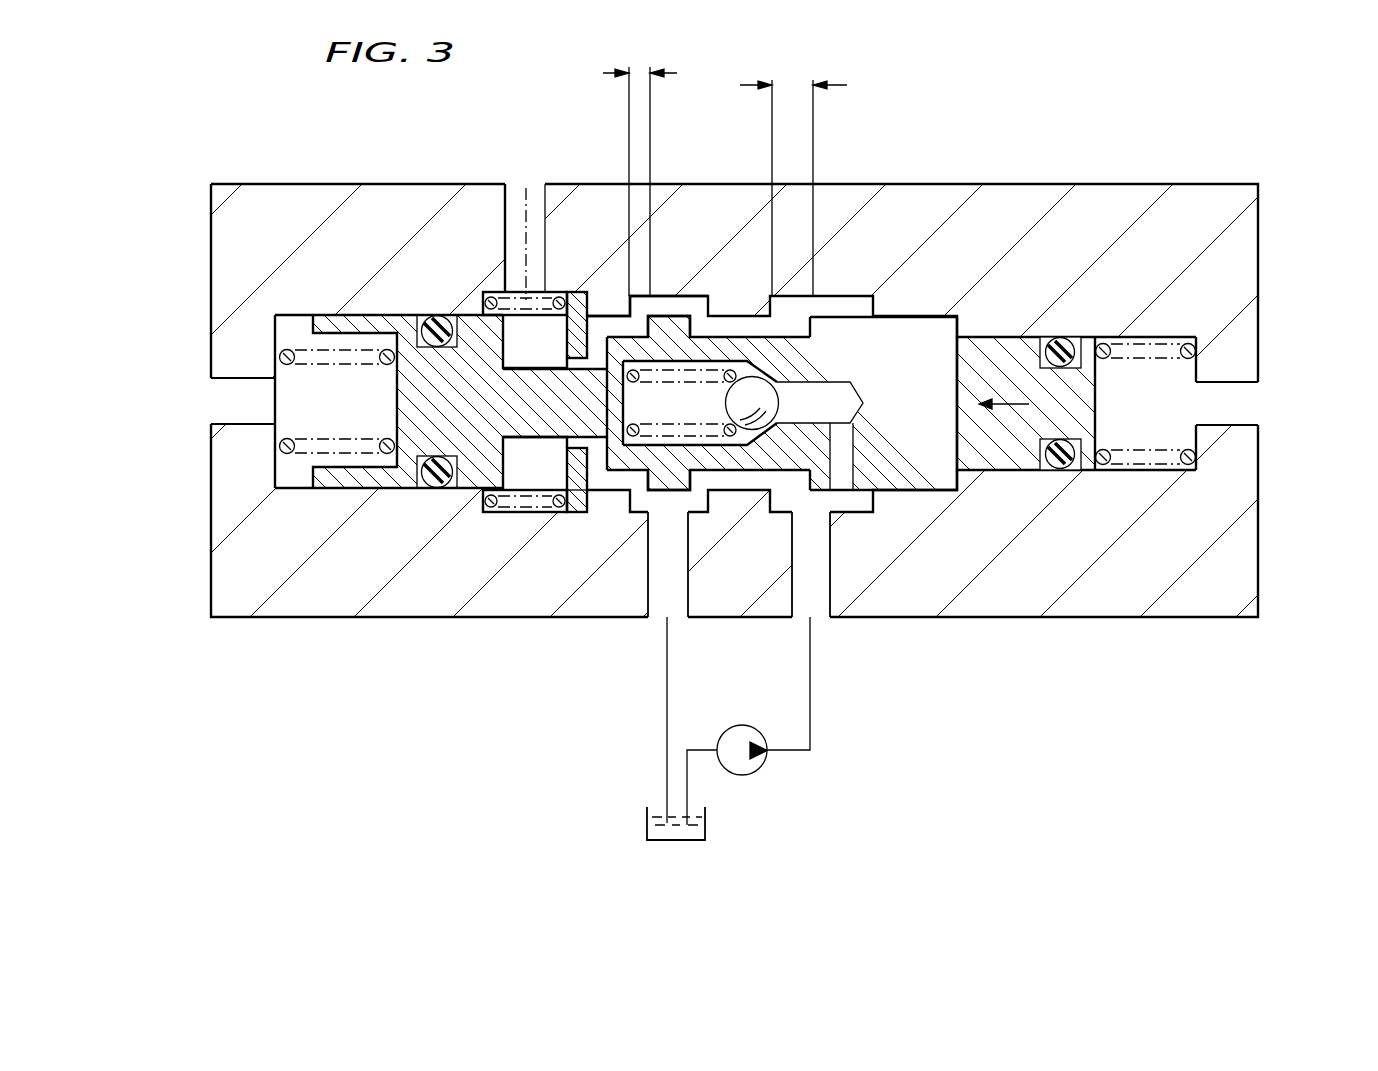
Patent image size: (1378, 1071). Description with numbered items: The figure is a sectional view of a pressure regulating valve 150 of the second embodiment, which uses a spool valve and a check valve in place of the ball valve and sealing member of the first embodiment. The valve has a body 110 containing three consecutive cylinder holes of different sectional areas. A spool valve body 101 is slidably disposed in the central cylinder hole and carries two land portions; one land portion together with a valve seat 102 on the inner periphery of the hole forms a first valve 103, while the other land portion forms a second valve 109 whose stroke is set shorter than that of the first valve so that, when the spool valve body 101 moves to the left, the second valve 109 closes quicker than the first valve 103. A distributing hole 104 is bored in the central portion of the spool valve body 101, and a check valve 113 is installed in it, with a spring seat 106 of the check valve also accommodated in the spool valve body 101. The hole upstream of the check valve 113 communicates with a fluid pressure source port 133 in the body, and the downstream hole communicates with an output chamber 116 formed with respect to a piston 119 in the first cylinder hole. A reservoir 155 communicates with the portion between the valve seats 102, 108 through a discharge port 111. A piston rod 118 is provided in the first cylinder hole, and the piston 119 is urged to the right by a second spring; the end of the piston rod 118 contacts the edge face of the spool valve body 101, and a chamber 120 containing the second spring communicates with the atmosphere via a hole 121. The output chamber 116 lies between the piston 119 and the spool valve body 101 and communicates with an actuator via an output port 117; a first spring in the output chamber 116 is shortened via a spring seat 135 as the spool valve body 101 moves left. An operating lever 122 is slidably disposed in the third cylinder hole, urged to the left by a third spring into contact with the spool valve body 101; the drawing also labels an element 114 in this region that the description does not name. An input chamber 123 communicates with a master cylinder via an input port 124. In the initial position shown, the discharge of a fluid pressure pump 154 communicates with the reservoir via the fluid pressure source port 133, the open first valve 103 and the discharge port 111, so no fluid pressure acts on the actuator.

The spool valve body 101 is at (930, 330).
The valve seat 102 is at (815, 310).
The first valve 103 is at (837, 333).
The distributing hole 104 is at (842, 470).
The spring seat of the check valve 106 is at (577, 503).
The valve seat 108 is at (668, 475).
The second valve 109 is at (613, 310).
The body 110 is at (1208, 604).
The discharge port 111 is at (668, 600).
The check valve 113 is at (768, 410).
The seal rings 114 is at (990, 335).
The output chamber 116 is at (546, 357).
The output port 117 is at (515, 200).
The piston rod 118 is at (537, 432).
The piston 119 is at (470, 380).
The chamber 120 is at (297, 420).
The hole 121 is at (223, 393).
The operating lever 122 is at (1009, 308).
The input chamber 123 is at (1136, 427).
The input port 124 is at (1242, 402).
The fluid pressure source port 133 is at (817, 600).
The spring seat 135 is at (553, 513).
The pressure regulating valve 150 is at (689, 431).
The fluid pressure pump 154 is at (758, 772).
The reservoir 155 is at (683, 842).